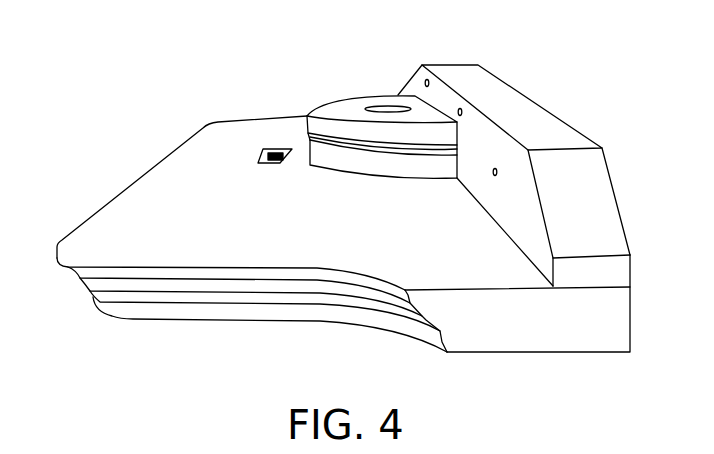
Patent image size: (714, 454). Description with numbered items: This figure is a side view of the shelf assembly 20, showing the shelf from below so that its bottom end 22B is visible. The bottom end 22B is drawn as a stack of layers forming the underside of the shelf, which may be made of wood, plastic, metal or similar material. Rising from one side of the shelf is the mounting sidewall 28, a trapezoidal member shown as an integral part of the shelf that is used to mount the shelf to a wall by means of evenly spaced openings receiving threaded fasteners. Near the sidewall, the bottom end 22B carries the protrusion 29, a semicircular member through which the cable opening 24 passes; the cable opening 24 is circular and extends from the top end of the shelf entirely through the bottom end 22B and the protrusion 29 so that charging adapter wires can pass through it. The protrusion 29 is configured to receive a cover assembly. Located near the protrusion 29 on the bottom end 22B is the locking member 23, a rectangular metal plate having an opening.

The shelf assembly 20 is at (160, 194).
The bottom end 22B is at (283, 240).
The locking member 23 is at (267, 150).
The cable opening 24 is at (388, 106).
The mounting sidewall 28 is at (595, 188).
The protrusion 29 is at (333, 117).